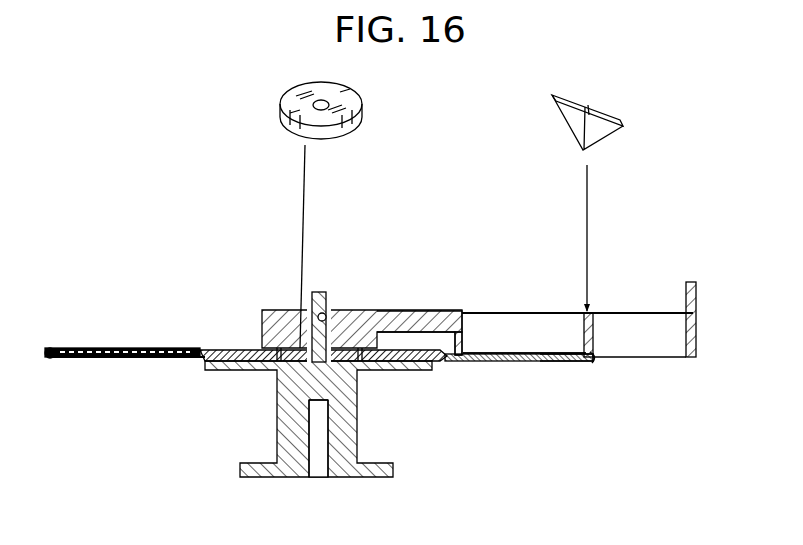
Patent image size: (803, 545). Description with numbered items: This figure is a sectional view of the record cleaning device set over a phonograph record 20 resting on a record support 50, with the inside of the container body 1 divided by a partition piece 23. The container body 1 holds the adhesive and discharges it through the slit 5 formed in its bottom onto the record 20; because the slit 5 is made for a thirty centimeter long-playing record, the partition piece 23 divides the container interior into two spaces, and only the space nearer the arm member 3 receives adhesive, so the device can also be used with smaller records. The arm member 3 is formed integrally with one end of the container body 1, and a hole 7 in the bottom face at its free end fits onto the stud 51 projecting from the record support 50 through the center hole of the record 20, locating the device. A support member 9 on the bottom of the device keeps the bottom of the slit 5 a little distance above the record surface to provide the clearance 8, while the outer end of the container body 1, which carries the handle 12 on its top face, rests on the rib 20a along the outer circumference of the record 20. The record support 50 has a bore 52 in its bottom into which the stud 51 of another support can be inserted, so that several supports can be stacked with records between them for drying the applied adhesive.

The container body 1 is at (579, 302).
The arm member 3 is at (432, 311).
The slit 5 is at (538, 350).
The hole 7 is at (325, 320).
The clearance 8 is at (528, 362).
The support member 9 is at (378, 317).
The handle 12 is at (688, 283).
The phonograph record 20 is at (593, 381).
The rib 20a is at (593, 363).
The partition piece 23 is at (607, 112).
The record support 50 is at (314, 435).
The stud 51 is at (336, 307).
The bore 52 is at (312, 448).